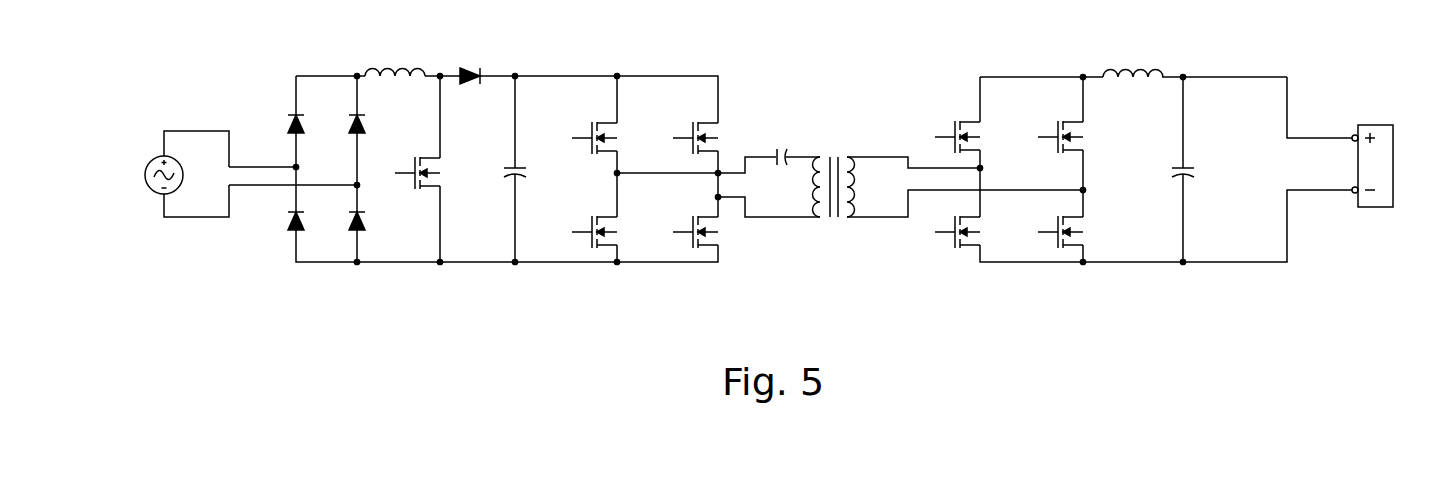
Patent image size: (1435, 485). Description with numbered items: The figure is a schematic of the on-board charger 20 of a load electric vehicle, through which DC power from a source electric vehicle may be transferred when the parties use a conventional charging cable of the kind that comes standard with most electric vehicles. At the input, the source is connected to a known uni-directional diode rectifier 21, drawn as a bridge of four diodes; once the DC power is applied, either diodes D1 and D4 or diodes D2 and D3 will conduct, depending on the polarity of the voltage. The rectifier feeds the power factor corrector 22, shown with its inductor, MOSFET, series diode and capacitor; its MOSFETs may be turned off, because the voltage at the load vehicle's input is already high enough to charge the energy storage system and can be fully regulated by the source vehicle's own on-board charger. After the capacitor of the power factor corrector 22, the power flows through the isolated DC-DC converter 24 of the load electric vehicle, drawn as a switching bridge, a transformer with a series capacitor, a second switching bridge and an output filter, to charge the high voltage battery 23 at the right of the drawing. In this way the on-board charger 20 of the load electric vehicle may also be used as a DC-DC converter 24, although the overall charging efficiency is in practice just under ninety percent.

The on-board charger 20 is at (209, 83).
The uni-directional diode rectifier 21 is at (315, 208).
The power factor corrector 22 is at (386, 288).
The isolated DC-DC converter 24 is at (1180, 288).
The high voltage battery 23 is at (1230, 288).
The diode D1 is at (262, 127).
The diode D2 is at (262, 219).
The diode D3 is at (386, 127).
The diode D4 is at (386, 219).